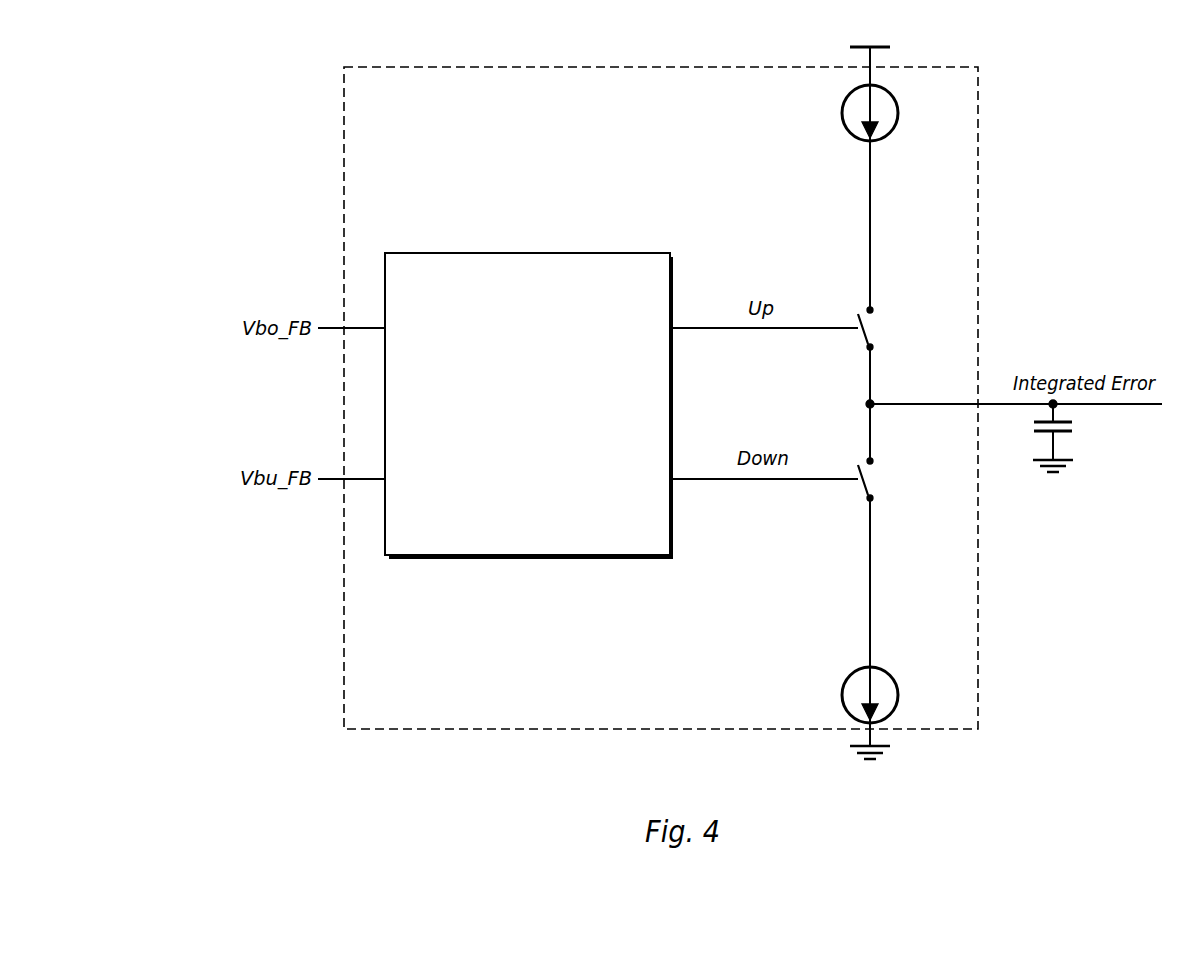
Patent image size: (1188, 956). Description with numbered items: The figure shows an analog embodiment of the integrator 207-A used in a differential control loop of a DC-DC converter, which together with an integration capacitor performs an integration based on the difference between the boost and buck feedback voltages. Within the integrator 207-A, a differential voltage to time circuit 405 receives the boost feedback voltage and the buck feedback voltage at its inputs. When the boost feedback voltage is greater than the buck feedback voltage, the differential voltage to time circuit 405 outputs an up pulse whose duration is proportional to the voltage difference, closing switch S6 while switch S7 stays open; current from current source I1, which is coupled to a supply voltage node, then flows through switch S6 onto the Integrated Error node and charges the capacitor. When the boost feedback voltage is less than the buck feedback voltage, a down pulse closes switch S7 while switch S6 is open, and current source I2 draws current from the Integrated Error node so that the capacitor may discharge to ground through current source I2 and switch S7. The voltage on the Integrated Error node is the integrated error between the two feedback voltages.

The integrator 207-A is at (525, 60).
The differential voltage to time circuit 405 is at (543, 474).
The current source I1 is at (886, 113).
The current source I2 is at (886, 695).
The switch S6 is at (884, 328).
The switch S7 is at (884, 479).